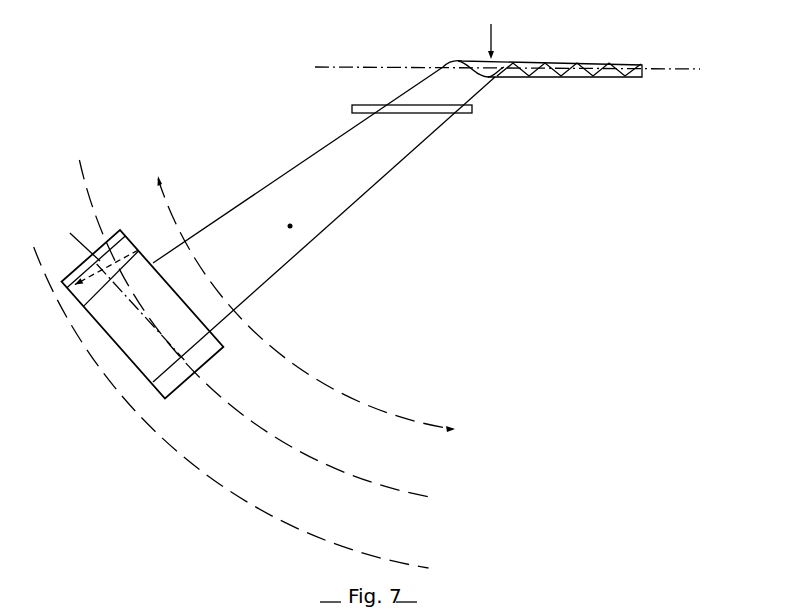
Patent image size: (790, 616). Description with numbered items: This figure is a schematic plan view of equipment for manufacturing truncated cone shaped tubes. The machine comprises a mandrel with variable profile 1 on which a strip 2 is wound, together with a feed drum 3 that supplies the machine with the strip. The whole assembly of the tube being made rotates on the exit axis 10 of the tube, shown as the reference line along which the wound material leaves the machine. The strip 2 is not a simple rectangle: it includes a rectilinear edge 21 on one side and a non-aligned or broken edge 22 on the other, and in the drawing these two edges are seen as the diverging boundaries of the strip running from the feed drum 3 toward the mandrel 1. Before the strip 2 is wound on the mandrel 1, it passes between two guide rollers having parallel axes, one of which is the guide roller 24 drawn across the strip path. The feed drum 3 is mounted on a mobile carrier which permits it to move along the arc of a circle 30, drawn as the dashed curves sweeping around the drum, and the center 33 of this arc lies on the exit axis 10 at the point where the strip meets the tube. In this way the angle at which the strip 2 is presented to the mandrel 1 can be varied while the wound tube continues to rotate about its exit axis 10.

The mandrel with variable profile 1 is at (491, 34).
The strip 2 is at (290, 226).
The feed drum 3 is at (119, 360).
The exit axis 10 is at (378, 62).
The rectilinear edge 21 is at (362, 208).
The non-aligned or broken edge 22 is at (282, 175).
The guide roller 24 is at (443, 110).
The arc of a circle 30 is at (429, 493).
The center 33 is at (497, 78).